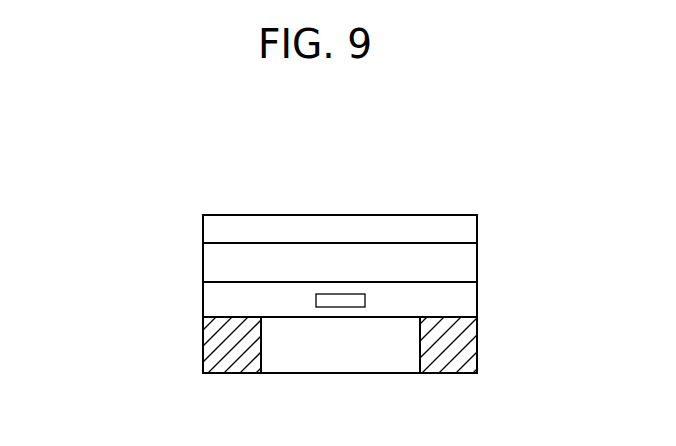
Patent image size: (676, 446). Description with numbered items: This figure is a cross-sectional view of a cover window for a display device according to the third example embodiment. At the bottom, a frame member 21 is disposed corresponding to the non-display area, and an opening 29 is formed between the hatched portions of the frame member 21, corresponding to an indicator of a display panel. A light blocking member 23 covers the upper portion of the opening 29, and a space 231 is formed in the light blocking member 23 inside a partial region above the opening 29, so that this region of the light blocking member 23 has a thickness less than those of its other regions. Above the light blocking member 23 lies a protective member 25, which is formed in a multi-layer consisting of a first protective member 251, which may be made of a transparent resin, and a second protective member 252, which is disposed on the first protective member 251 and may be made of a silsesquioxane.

The protective member 25 is at (281, 248).
The second protective member 252 is at (220, 228).
The first protective member 251 is at (220, 263).
The light blocking member 23 is at (220, 299).
The space 231 is at (341, 299).
The frame member 21 is at (220, 342).
The opening 29 is at (392, 352).